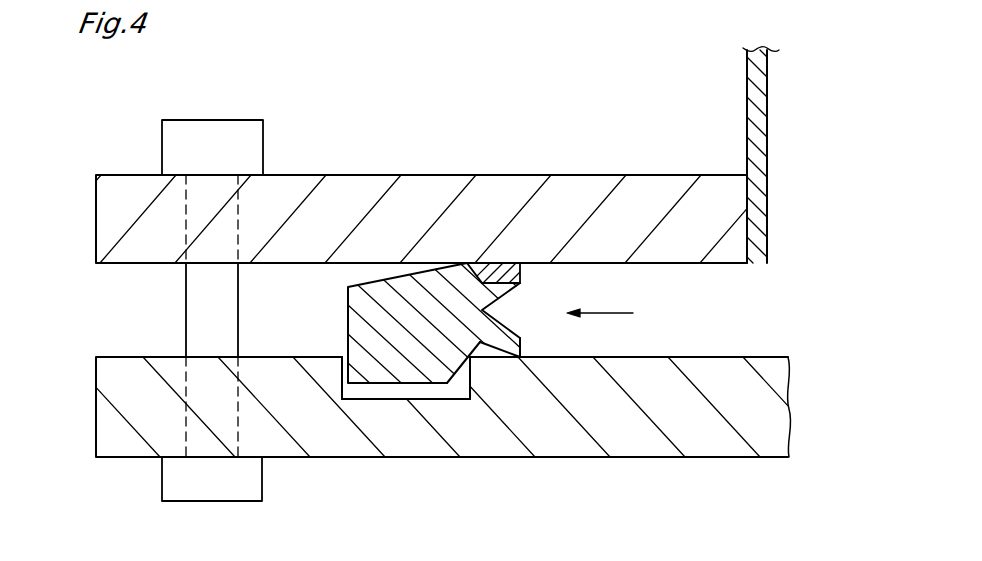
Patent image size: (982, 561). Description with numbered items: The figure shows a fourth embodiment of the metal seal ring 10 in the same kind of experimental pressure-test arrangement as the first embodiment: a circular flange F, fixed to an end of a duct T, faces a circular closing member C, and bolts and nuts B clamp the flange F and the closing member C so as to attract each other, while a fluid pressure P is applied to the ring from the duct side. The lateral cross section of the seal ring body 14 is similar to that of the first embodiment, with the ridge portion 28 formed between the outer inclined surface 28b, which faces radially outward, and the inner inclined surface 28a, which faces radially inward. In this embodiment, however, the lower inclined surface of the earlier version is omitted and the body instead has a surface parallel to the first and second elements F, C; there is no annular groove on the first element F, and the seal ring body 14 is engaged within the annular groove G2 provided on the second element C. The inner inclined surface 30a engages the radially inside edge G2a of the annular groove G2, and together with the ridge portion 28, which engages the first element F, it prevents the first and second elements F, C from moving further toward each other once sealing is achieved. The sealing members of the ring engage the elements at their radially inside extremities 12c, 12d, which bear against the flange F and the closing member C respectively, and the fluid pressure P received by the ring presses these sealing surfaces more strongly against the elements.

The bolts and nuts B is at (226, 133).
The flange (first element) F is at (697, 186).
The duct T is at (747, 60).
The closing member (second element) C is at (738, 445).
The metal seal ring 10 is at (449, 318).
The ridge portion 28 is at (467, 320).
The inner inclined surface 28a is at (484, 275).
The outer inclined surface 28b is at (402, 277).
The extremity of first sealing member 12c is at (530, 263).
The extremity of second sealing member 12d is at (521, 358).
The seal ring body 14 is at (392, 390).
The annular groove G2 is at (363, 417).
The radially inside edge of annular groove G2a is at (465, 375).
The inner inclined surface 30a is at (460, 375).
The fluid pressure P is at (612, 315).